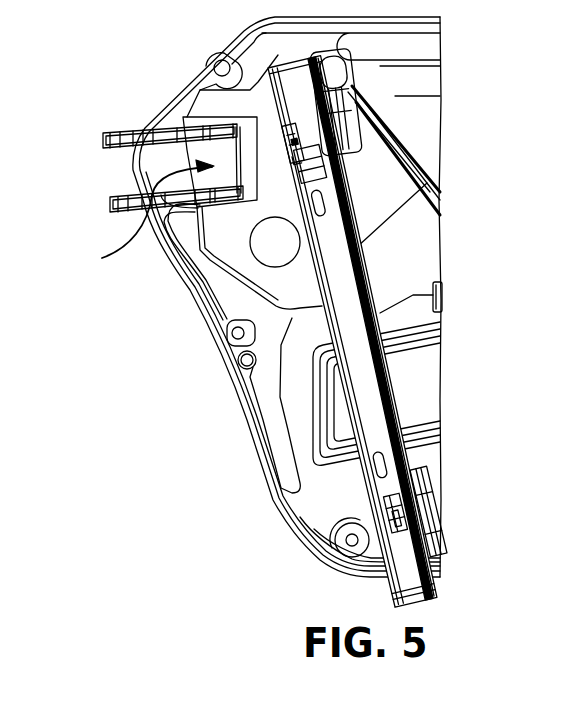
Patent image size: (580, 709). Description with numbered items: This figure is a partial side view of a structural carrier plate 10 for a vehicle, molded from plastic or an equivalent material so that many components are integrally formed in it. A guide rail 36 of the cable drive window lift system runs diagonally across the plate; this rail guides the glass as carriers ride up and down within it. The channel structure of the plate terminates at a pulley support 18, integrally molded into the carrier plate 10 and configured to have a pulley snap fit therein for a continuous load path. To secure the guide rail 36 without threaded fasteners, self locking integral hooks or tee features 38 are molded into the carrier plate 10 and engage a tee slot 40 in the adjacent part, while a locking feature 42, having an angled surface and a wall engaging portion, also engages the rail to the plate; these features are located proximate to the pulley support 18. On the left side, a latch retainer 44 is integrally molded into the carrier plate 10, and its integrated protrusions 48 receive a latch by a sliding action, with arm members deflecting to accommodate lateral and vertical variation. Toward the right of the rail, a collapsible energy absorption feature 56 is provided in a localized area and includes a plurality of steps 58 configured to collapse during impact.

The carrier plate 10 is at (163, 433).
The pulley support 18 is at (360, 106).
The guide rail 36 is at (340, 303).
The self locking integral hook 38 is at (413, 130).
The tee slot 40 is at (413, 164).
The locking feature 42 is at (415, 194).
The latch retainer 44 is at (103, 258).
The protrusion 48 is at (107, 142).
The collapsible energy absorption feature 56 is at (403, 377).
The step 58 is at (425, 340).